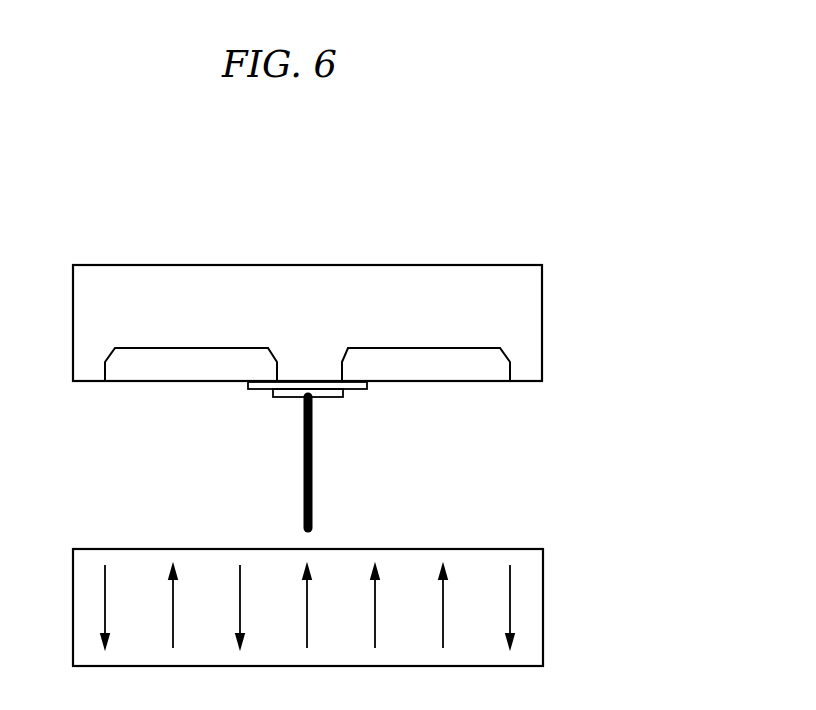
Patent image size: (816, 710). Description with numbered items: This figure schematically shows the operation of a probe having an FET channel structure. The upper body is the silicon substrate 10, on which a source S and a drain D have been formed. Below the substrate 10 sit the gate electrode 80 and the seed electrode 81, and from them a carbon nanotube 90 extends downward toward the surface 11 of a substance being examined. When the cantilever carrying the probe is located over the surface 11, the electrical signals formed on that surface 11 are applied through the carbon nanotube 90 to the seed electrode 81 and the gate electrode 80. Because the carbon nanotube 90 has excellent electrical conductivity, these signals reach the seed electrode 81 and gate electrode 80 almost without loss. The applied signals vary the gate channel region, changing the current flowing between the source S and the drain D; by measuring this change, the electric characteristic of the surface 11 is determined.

The silicon substrate 10 is at (525, 290).
The surface of a substance 11 is at (525, 590).
The gate electrode 80 is at (262, 387).
The seed electrode 81 is at (340, 397).
The carbon nanotube 90 is at (313, 475).